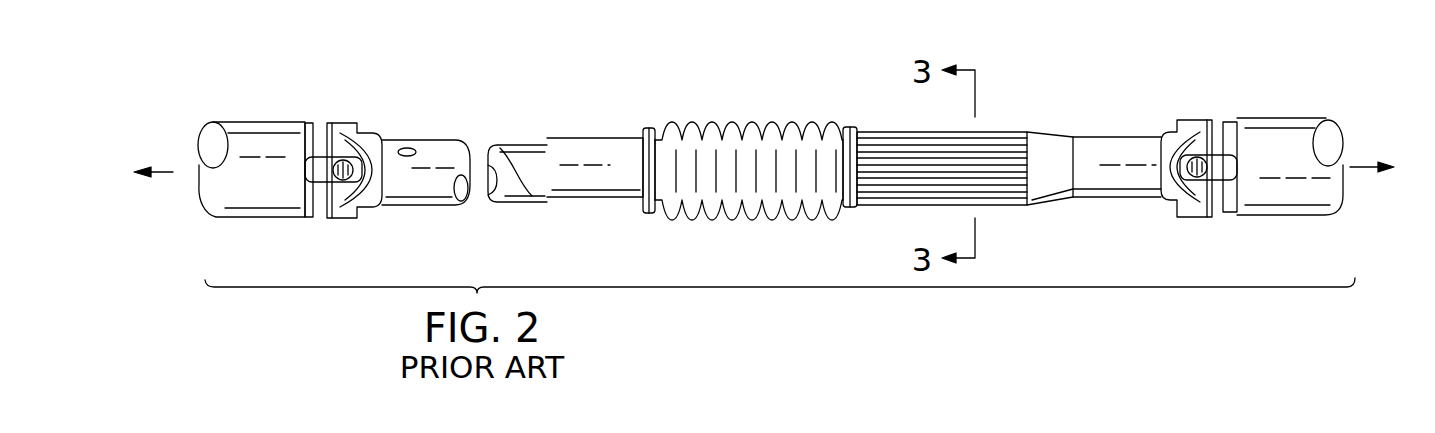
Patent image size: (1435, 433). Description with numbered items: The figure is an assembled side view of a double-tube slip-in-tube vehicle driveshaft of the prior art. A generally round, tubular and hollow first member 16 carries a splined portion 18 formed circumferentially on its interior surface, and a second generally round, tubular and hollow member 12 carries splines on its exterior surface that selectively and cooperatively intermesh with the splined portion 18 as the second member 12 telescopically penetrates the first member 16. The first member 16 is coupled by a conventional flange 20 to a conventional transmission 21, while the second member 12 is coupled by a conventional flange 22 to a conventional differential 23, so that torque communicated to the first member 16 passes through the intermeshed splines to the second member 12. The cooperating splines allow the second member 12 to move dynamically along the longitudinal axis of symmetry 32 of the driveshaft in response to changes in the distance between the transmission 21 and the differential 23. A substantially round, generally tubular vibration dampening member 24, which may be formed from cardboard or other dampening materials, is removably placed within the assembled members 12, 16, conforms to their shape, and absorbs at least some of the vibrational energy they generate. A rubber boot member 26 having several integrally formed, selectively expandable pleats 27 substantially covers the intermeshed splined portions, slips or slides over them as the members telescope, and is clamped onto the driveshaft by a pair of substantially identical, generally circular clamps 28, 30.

The second member 12 is at (603, 150).
The first member 16 is at (1112, 153).
The splined portion 18 is at (890, 153).
The flange 20 is at (1190, 118).
The transmission 21 is at (1285, 142).
The flange 22 is at (345, 121).
The differential 23 is at (259, 143).
The vibration dampening member 24 is at (527, 155).
The rubber boot member 26 is at (749, 132).
The pleats 27 is at (715, 124).
The clamp 28 is at (652, 215).
The clamp 30 is at (847, 213).
The longitudinal axis of symmetry 32 is at (1355, 167).